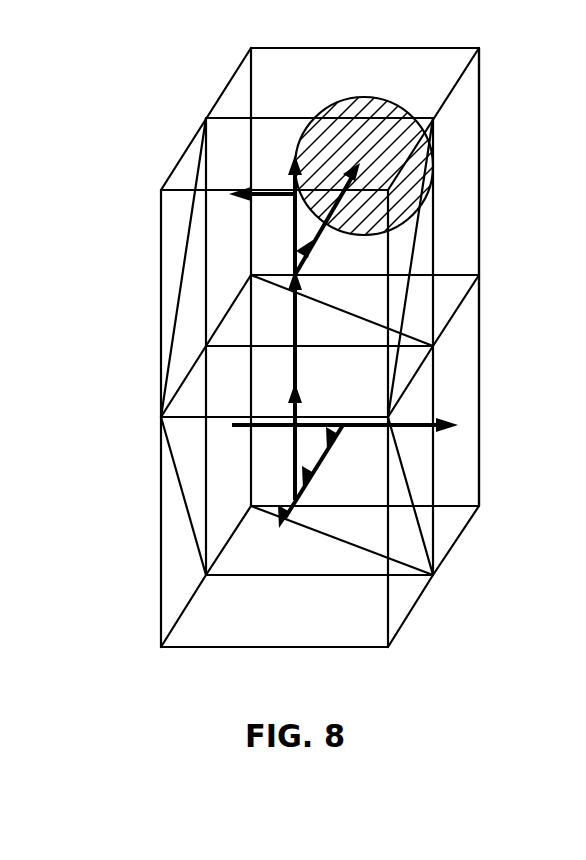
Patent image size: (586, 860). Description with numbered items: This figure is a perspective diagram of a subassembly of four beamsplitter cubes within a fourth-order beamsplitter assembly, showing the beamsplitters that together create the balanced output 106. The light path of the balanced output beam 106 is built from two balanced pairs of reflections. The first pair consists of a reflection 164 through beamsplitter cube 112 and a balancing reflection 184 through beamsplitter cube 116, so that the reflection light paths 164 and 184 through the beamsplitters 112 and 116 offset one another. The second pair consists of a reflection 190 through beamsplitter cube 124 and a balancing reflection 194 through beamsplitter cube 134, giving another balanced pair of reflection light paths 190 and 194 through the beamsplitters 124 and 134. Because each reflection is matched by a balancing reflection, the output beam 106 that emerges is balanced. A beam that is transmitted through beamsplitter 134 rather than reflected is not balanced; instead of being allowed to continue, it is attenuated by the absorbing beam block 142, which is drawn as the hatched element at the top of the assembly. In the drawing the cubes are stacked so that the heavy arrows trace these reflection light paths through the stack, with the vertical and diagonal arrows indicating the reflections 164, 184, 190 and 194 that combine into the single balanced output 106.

The absorbing beam block 142 is at (329, 106).
The beamsplitter cube 134 is at (481, 106).
The balanced output 106 is at (200, 188).
The reflection 190 is at (318, 244).
The balancing reflection 194 is at (254, 198).
The beamsplitter cube 124 is at (158, 363).
The beamsplitter cube 112 is at (481, 352).
The balancing reflection 184 is at (305, 447).
The reflection 164 is at (327, 455).
The beamsplitter cube 116 is at (417, 612).